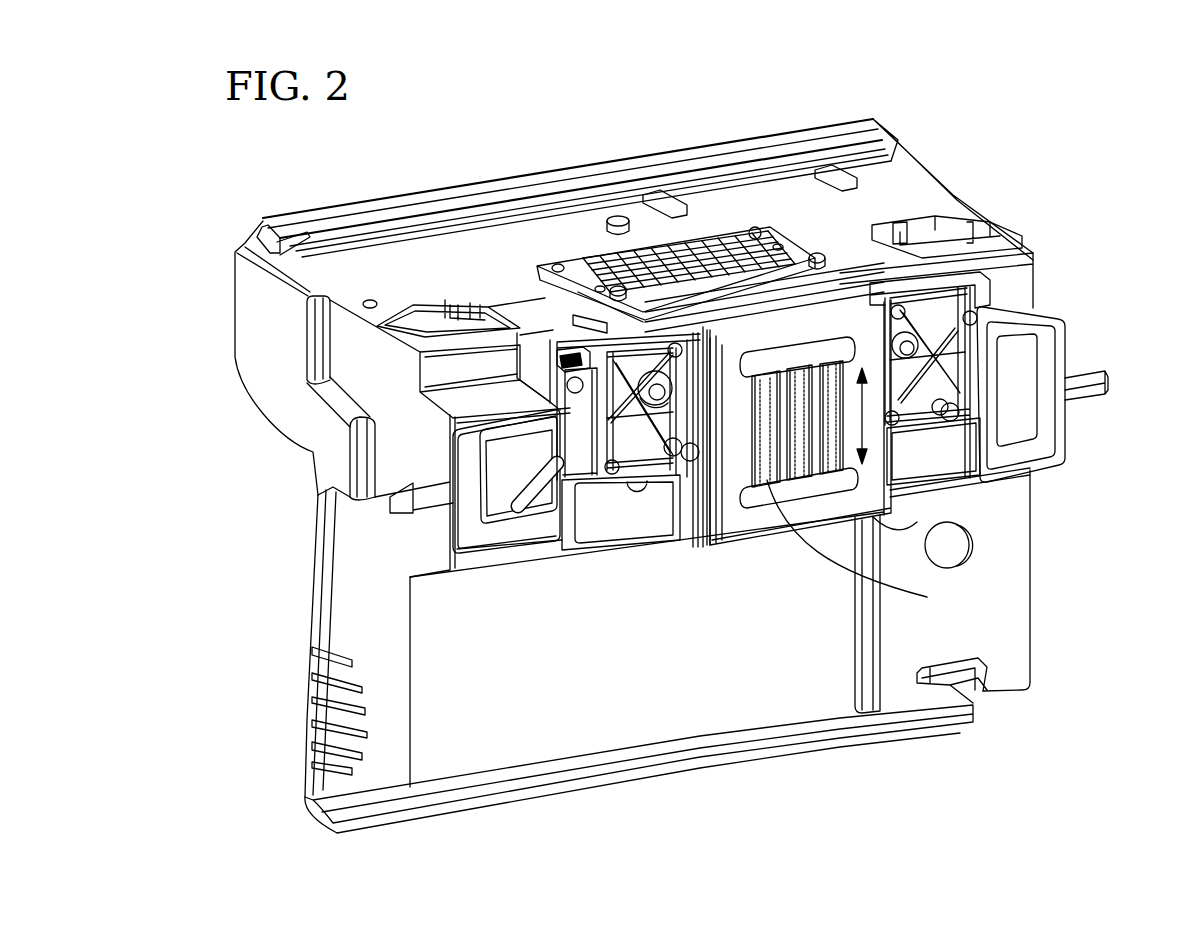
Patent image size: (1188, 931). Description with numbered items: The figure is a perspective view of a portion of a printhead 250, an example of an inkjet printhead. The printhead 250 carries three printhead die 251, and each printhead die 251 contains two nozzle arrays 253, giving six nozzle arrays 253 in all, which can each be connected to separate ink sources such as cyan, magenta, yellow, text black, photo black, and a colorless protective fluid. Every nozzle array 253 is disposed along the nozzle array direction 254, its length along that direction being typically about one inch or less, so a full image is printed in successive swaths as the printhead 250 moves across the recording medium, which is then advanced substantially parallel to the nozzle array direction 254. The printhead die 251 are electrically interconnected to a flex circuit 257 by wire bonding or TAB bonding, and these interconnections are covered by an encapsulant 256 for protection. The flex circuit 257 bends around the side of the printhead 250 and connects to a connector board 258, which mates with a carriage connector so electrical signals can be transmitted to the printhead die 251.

The printhead 250 is at (363, 557).
The printhead die 251 is at (815, 385).
The nozzle array 253 is at (902, 374).
The nozzle array direction 254 is at (862, 400).
The encapsulant 256 is at (917, 522).
The flex circuit 257 is at (745, 517).
The connector board 258 is at (707, 253).